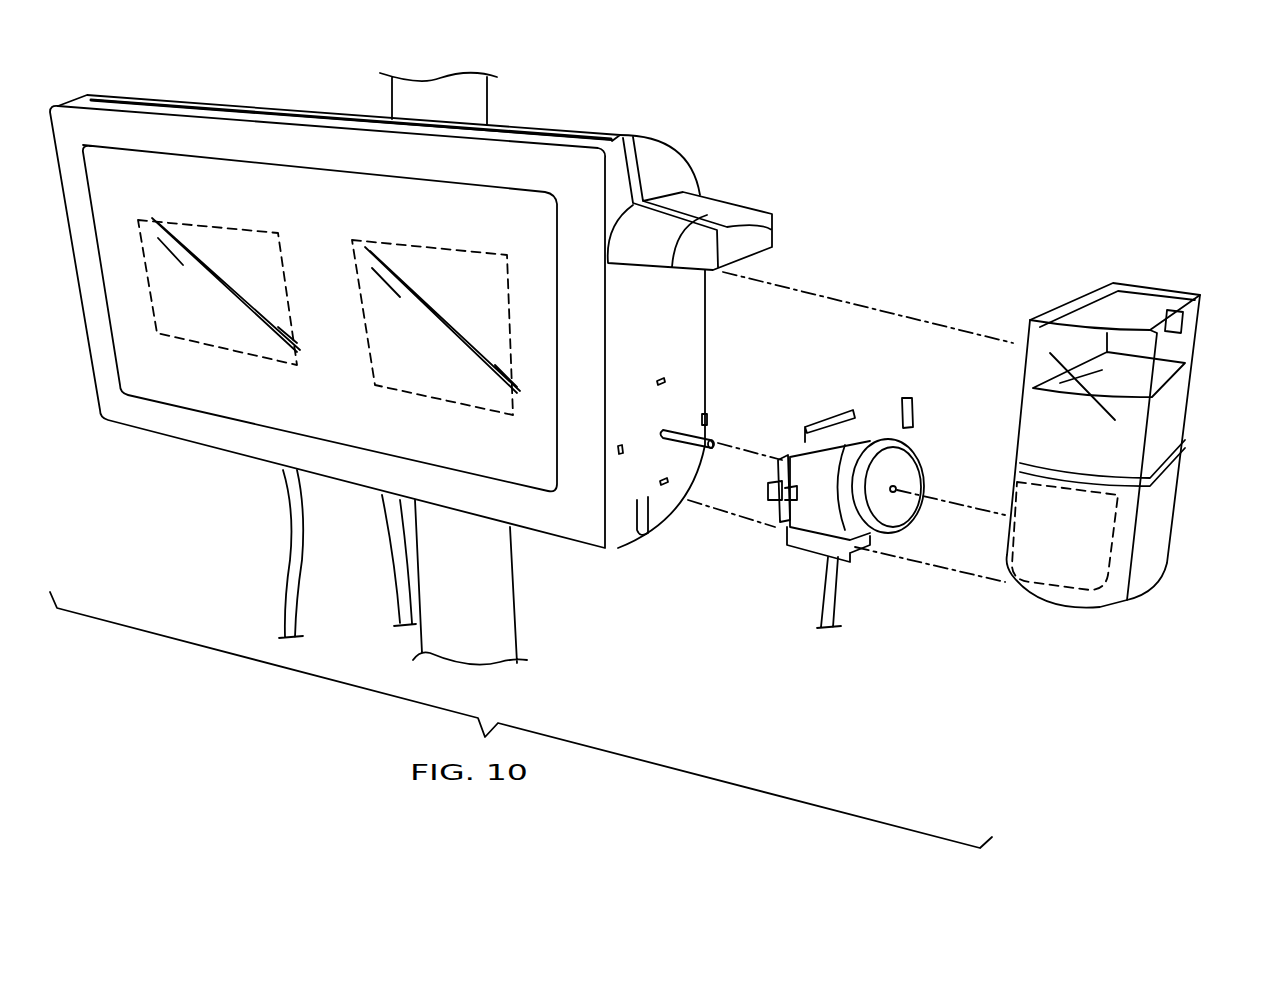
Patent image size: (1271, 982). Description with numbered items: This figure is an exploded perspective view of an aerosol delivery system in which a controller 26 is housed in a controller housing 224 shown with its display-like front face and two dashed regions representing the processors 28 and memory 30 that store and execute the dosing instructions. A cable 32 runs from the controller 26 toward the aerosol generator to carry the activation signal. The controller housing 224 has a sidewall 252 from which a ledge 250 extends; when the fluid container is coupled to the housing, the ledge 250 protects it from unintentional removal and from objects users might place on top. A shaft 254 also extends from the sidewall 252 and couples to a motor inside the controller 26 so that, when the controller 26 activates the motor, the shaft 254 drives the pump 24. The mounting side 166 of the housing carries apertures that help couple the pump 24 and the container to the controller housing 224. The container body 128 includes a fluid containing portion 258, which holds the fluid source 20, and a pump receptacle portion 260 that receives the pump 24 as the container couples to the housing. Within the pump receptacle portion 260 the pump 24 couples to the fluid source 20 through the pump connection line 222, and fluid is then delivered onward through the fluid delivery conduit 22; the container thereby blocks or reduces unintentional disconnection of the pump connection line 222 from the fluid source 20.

The fluid source 20 is at (1104, 473).
The fluid delivery conduit 22 is at (832, 595).
The pump 24 is at (847, 442).
The controller 26 is at (392, 313).
The processors 28 is at (208, 226).
The memory 30 is at (428, 247).
The cable 32 is at (282, 582).
The container body 128 is at (1160, 513).
The mounting side 166 is at (730, 400).
The pump connection line 222 is at (907, 423).
The controller housing 224 is at (167, 423).
The ledge 250 is at (737, 228).
The sidewall 252 is at (620, 510).
The shaft 254 is at (677, 443).
The fluid containing portion 258 is at (1063, 425).
The pump receptacle portion 260 is at (1067, 567).